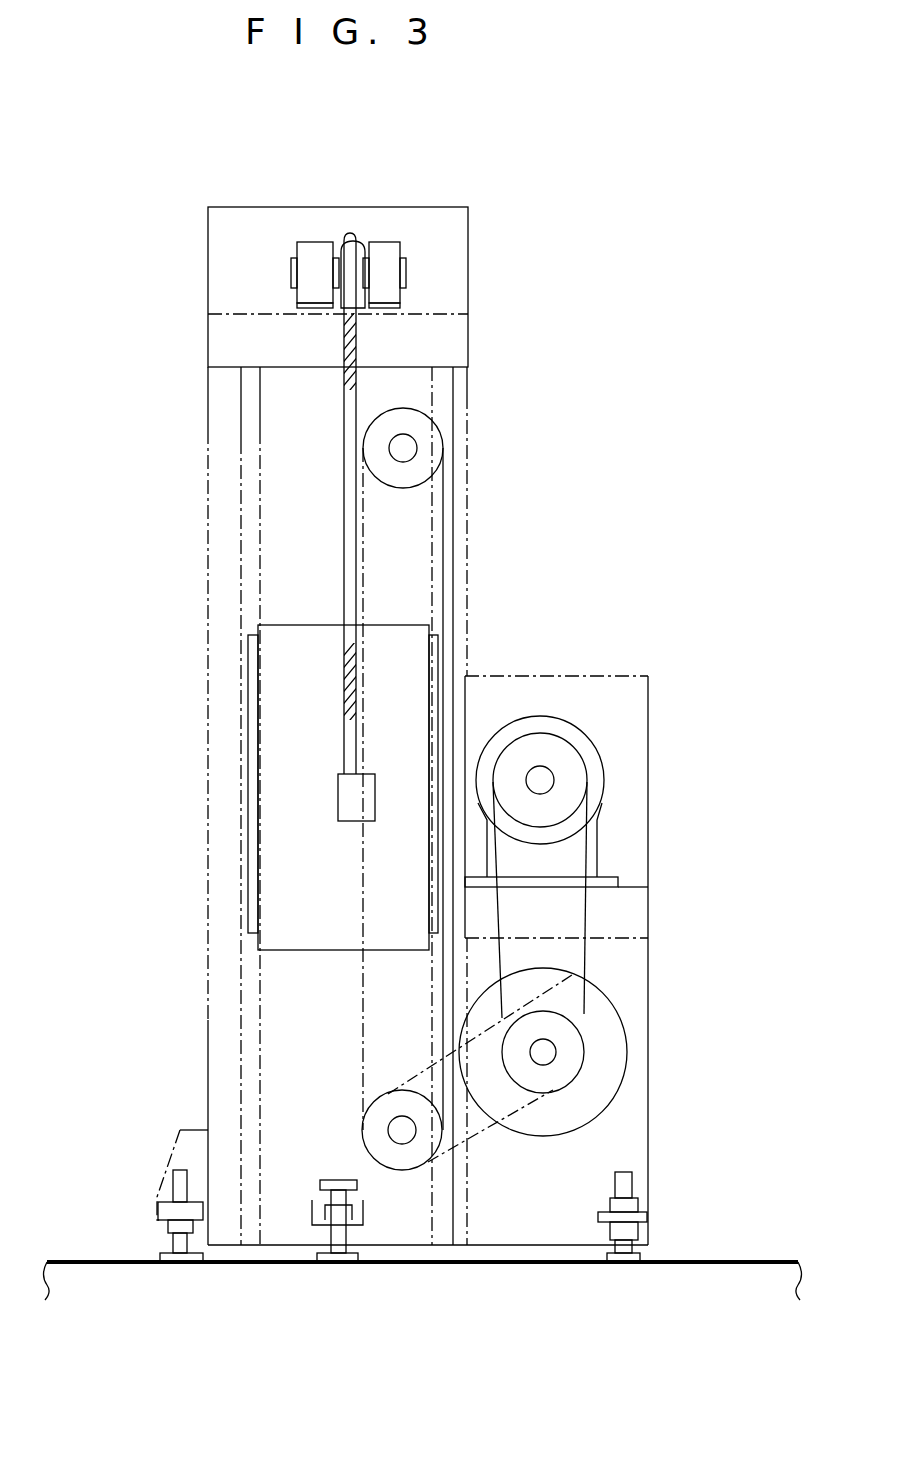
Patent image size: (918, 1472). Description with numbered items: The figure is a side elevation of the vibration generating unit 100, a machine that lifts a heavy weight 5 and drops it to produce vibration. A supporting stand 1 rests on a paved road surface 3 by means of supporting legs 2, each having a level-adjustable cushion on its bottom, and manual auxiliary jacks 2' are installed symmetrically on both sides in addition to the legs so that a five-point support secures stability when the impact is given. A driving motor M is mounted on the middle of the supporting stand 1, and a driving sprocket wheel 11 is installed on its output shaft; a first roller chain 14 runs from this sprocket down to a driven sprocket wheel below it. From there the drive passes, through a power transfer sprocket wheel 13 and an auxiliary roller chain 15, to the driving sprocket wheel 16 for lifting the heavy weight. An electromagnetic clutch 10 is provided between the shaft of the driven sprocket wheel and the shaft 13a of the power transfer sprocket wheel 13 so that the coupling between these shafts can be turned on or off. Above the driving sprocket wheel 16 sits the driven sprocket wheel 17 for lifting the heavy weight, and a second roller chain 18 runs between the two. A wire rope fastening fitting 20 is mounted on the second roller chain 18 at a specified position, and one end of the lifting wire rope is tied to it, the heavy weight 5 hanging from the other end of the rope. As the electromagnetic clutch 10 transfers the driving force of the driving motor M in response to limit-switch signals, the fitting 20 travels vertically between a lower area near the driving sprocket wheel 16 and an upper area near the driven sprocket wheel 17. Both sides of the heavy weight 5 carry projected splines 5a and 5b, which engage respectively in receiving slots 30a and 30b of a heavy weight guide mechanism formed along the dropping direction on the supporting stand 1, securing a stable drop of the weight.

The vibration generating unit 100 is at (427, 196).
The supporting stand 1 is at (230, 405).
The receiving slot 30a is at (248, 500).
The receiving slot 30b is at (452, 565).
The wire rope fastening fitting 20 is at (338, 800).
The driven sprocket wheel for lifting the heavy weight 17 is at (440, 440).
The driving sprocket wheel for lifting the heavy weight 16 is at (368, 1135).
The second roller chain 18 is at (365, 523).
The heavy weight 5 is at (278, 767).
The projected spline 5a is at (252, 697).
The projected spline 5b is at (435, 670).
The driving motor M is at (590, 736).
The driving sprocket wheel 11 is at (585, 770).
The first roller chain 14 is at (590, 917).
The electromagnetic clutch 10 is at (562, 982).
The power transfer sprocket wheel 13 is at (567, 1027).
The shaft of the power transfer sprocket wheel 13a is at (556, 1052).
The auxiliary roller chain 15 is at (505, 1128).
The supporting leg 2 is at (405, 1212).
The manual auxiliary jack 2' is at (303, 1266).
The paved road surface 3 is at (760, 1262).